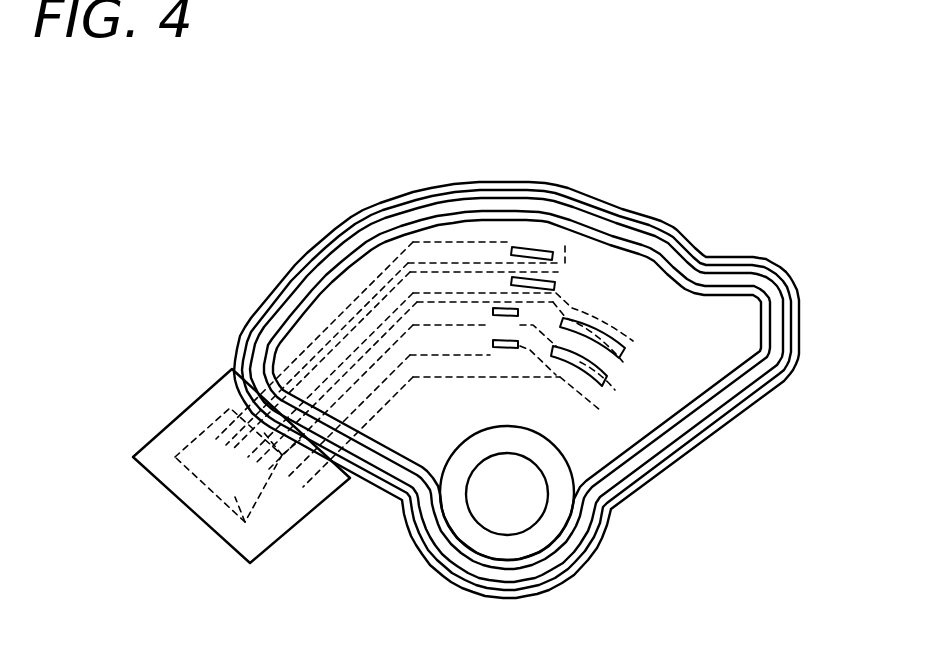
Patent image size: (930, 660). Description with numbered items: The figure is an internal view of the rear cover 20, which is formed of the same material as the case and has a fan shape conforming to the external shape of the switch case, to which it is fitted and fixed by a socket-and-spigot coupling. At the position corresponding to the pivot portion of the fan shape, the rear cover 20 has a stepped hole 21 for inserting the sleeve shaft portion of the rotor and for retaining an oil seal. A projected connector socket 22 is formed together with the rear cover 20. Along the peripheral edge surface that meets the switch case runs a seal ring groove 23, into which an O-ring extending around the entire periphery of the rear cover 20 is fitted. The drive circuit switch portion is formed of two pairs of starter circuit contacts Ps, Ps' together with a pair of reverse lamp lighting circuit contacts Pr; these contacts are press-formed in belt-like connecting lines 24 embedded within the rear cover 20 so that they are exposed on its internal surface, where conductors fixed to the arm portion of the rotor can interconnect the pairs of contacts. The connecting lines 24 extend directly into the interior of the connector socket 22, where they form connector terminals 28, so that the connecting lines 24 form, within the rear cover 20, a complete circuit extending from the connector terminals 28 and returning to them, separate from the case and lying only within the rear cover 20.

The rear cover 20 is at (670, 219).
The stepped hole 21 is at (513, 531).
The connector socket 22 is at (277, 533).
The seal ring groove 23 is at (780, 319).
The connecting lines 24 is at (356, 290).
The connector terminals 28 is at (175, 487).
The reverse lamp lighting circuit contacts Pr is at (541, 245).
The starter circuit contacts Ps is at (617, 364).
The starter circuit contacts Ps' is at (480, 364).